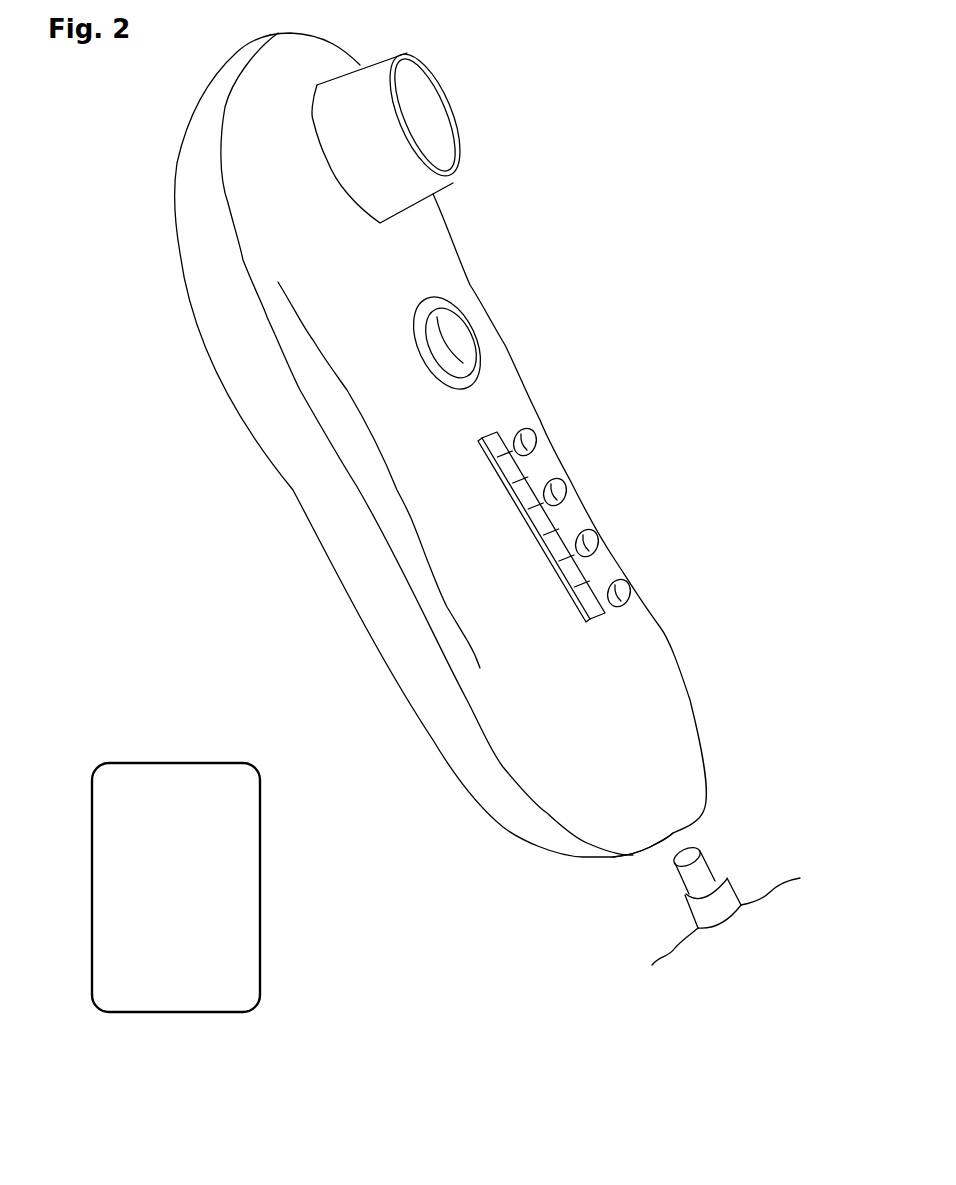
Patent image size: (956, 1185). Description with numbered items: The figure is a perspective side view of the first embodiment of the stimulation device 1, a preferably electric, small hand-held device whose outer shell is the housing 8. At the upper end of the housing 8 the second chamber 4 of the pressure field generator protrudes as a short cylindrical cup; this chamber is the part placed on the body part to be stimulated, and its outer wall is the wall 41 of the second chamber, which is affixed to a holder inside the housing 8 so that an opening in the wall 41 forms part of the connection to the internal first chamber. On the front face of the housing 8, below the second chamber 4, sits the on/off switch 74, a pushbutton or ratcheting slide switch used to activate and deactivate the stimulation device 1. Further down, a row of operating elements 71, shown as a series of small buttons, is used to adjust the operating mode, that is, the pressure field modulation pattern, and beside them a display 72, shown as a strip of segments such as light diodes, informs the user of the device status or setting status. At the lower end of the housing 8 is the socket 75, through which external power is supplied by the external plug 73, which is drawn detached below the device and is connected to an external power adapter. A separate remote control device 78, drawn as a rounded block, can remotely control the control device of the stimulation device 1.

The stimulation device 1 is at (300, 641).
The second chamber 4 is at (427, 117).
The wall of the second chamber 41 is at (402, 187).
The on/off switch 74 is at (460, 338).
The operating elements 71 is at (532, 442).
The display 72 is at (542, 520).
The housing 8 is at (573, 767).
The socket 75 is at (675, 835).
The external plug 73 is at (703, 908).
The remote control device 78 is at (260, 913).